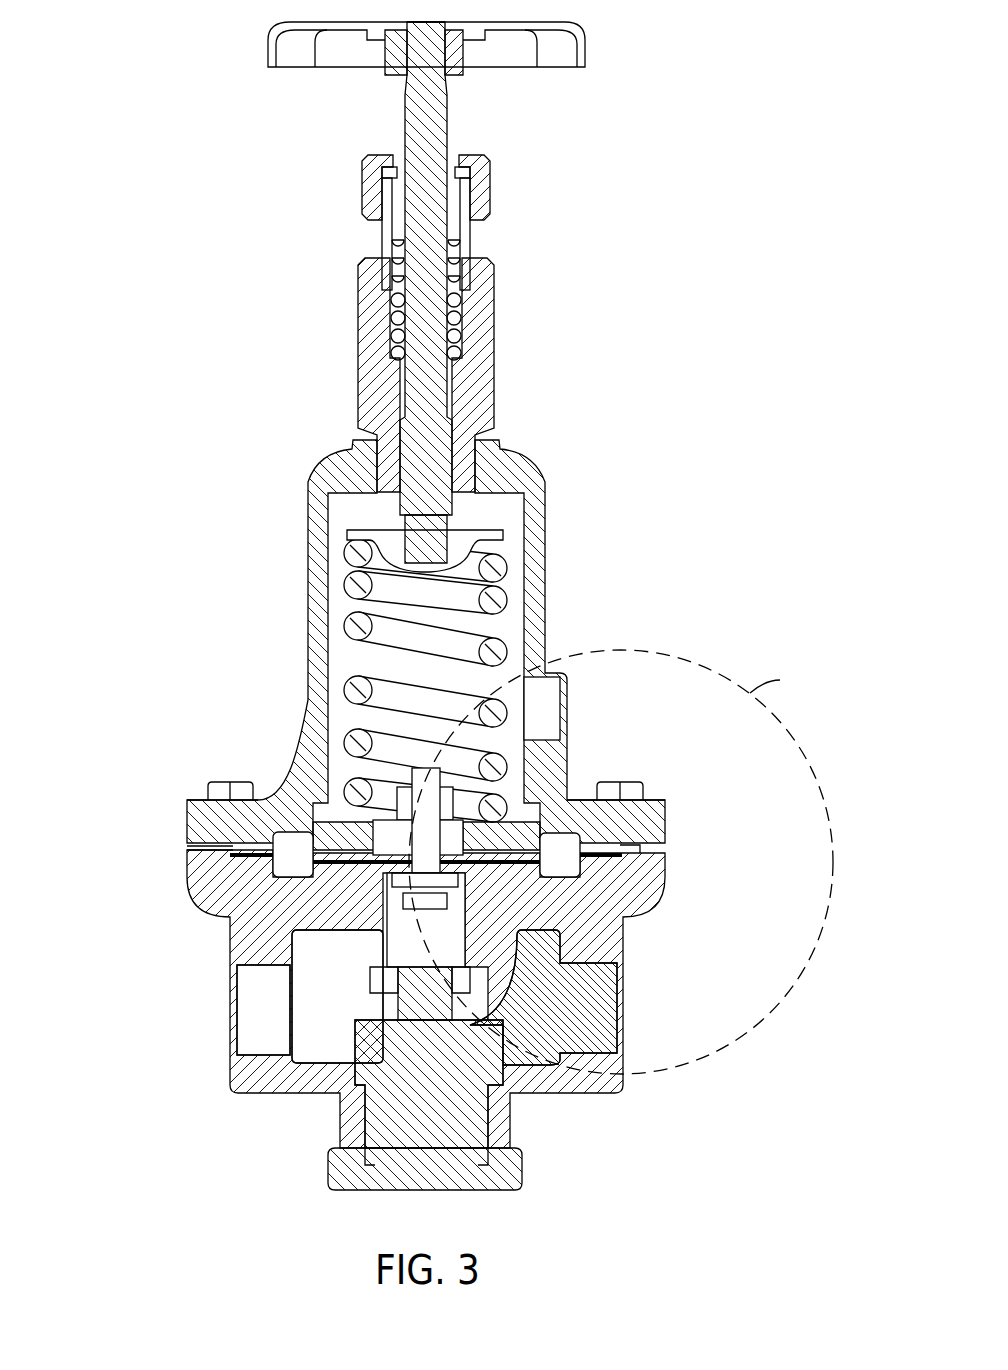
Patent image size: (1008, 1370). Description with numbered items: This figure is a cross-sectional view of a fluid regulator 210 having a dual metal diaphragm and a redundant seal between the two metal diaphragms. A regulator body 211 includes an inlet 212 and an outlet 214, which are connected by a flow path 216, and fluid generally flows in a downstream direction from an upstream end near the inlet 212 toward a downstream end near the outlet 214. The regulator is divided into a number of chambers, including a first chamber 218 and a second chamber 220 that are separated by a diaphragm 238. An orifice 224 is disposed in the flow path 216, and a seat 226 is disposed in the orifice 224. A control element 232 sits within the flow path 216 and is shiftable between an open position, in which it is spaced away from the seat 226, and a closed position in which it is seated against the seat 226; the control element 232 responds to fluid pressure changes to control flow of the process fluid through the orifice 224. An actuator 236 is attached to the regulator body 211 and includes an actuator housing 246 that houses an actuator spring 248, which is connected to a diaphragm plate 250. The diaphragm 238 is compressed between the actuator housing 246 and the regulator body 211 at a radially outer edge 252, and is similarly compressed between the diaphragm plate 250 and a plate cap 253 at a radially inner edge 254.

The fluid regulator 210 is at (748, 225).
The actuator 236 is at (126, 386).
The actuator housing 246 is at (537, 560).
The actuator spring 248 is at (500, 605).
The second chamber 220 is at (338, 657).
The radially inner edge 254 is at (372, 832).
The diaphragm 238 is at (287, 845).
The diaphragm plate 250 is at (530, 850).
The radially outer edge 252 is at (622, 853).
The plate cap 253 is at (505, 877).
The control element 232 is at (400, 950).
The first chamber 218 is at (318, 951).
The seat 226 is at (380, 977).
The orifice 224 is at (387, 1007).
The inlet 212 is at (250, 1043).
The regulator body 211 is at (238, 1078).
The outlet 214 is at (607, 1017).
The flow path 216 is at (467, 1065).